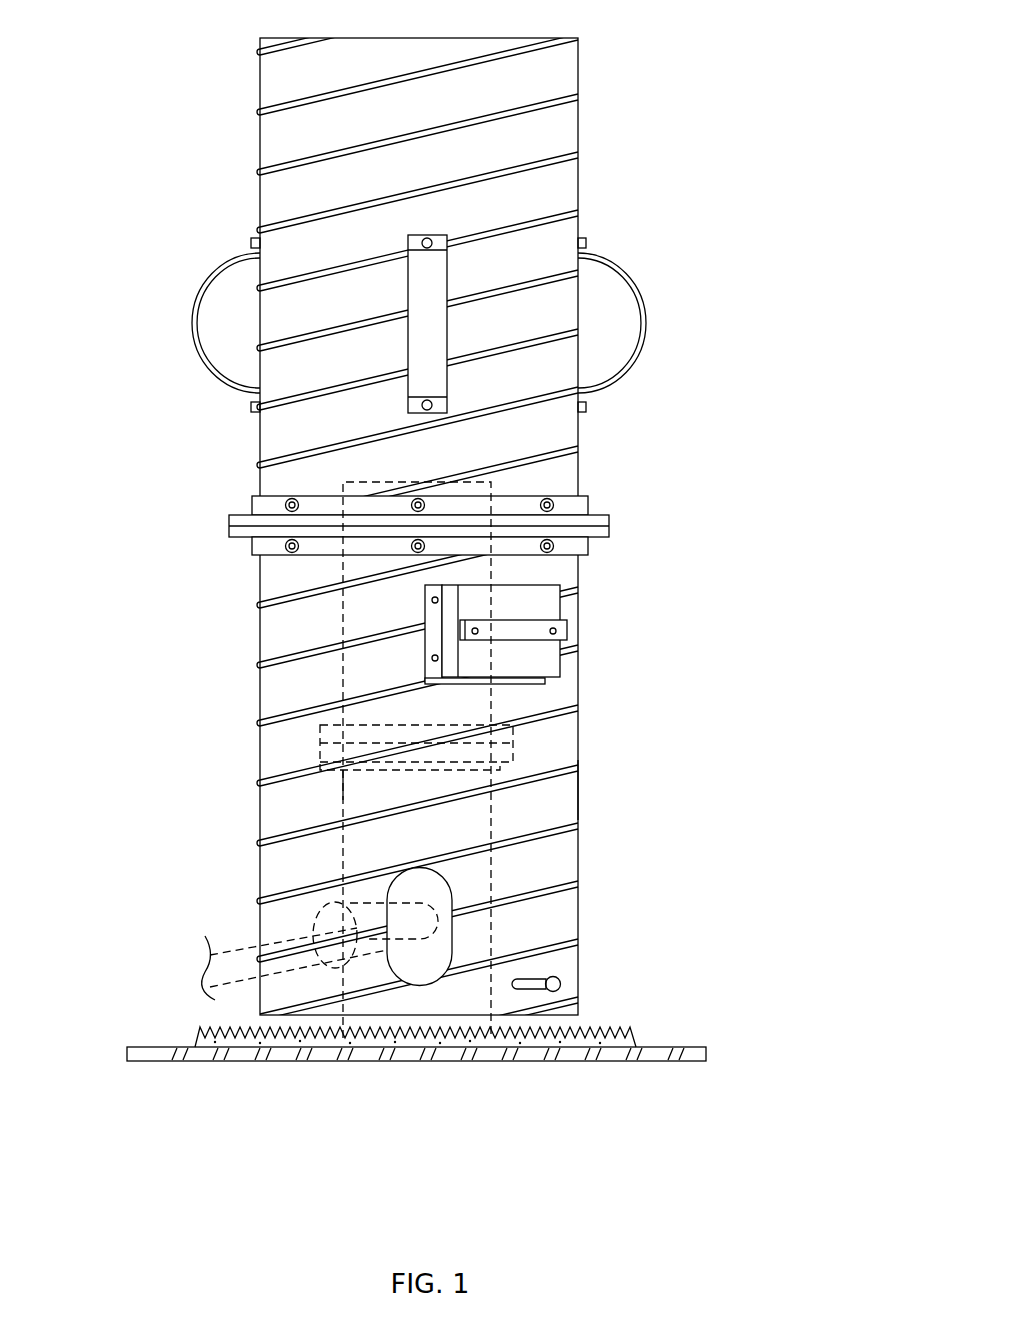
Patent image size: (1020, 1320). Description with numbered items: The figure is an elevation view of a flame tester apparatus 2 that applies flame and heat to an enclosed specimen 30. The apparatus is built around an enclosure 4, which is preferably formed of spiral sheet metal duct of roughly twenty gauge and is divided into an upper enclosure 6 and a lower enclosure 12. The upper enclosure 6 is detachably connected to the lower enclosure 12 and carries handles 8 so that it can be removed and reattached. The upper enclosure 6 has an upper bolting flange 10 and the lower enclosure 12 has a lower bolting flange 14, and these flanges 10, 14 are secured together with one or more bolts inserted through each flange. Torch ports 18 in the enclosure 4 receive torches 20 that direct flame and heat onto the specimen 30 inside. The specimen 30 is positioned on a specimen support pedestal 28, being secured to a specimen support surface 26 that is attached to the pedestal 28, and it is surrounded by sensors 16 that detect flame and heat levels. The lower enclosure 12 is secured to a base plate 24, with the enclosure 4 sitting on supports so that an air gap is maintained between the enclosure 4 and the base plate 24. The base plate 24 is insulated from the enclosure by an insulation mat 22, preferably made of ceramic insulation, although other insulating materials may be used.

The flame tester apparatus 2 is at (192, 35).
The enclosure 4 is at (578, 67).
The upper enclosure 6 is at (552, 187).
The handles 8 is at (200, 358).
The upper bolting flange 10 is at (250, 522).
The lower enclosure 12 is at (574, 794).
The lower bolting flange 14 is at (233, 537).
The sensors 16 is at (553, 590).
The torch ports 18 is at (440, 868).
The torches 20 is at (350, 910).
The insulation mat 22 is at (622, 1028).
The base plate 24 is at (688, 1053).
The specimen support surface 26 is at (494, 770).
The specimen support pedestal 28 is at (350, 793).
The specimen 30 is at (487, 490).